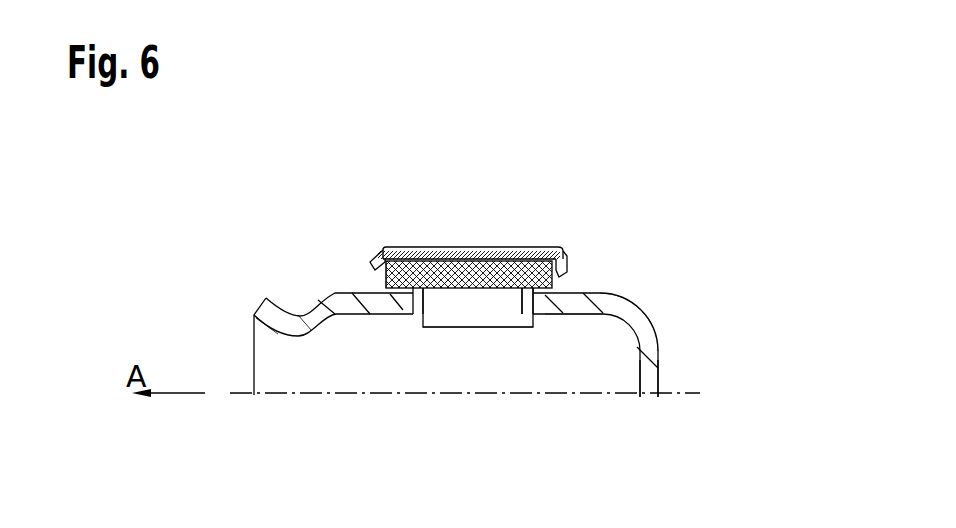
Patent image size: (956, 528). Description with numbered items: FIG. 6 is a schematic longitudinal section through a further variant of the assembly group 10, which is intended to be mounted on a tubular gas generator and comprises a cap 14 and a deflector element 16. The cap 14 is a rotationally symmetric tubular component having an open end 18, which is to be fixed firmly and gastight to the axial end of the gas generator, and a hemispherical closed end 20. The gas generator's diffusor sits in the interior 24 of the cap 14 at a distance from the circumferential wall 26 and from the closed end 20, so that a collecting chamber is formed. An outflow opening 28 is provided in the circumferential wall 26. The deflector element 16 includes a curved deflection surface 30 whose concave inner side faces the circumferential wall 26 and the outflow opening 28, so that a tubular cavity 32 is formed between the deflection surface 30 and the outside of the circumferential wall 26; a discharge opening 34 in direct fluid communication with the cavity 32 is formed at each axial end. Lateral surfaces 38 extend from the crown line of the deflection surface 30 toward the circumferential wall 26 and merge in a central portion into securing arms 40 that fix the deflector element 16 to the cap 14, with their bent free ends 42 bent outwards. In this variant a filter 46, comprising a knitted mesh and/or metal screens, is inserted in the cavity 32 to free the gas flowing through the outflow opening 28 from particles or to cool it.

The assembly group 10 is at (265, 204).
The cap 14 is at (706, 321).
The deflector element 16 is at (540, 203).
The open end 18 is at (254, 355).
The closed end 20 is at (652, 383).
The interior 24 is at (563, 373).
The circumferential wall 26 is at (633, 318).
The outflow opening 28 is at (523, 302).
The deflection surface 30 is at (450, 261).
The cavity 32 is at (505, 258).
The discharge opening 34 is at (373, 283).
The lateral surface 38 is at (407, 330).
The securing arm 40 is at (467, 302).
The bent free end 42 is at (443, 320).
The filter 46 is at (410, 258).